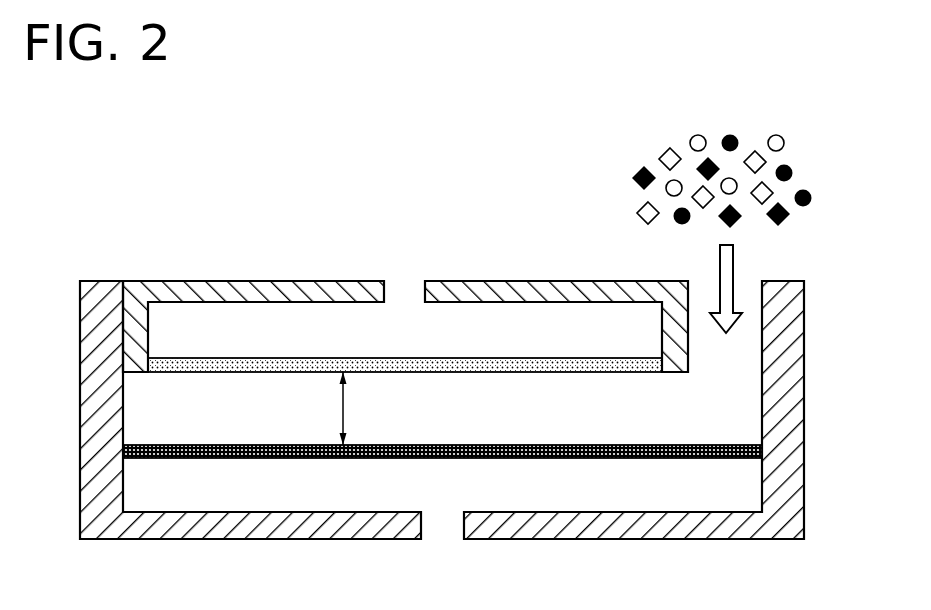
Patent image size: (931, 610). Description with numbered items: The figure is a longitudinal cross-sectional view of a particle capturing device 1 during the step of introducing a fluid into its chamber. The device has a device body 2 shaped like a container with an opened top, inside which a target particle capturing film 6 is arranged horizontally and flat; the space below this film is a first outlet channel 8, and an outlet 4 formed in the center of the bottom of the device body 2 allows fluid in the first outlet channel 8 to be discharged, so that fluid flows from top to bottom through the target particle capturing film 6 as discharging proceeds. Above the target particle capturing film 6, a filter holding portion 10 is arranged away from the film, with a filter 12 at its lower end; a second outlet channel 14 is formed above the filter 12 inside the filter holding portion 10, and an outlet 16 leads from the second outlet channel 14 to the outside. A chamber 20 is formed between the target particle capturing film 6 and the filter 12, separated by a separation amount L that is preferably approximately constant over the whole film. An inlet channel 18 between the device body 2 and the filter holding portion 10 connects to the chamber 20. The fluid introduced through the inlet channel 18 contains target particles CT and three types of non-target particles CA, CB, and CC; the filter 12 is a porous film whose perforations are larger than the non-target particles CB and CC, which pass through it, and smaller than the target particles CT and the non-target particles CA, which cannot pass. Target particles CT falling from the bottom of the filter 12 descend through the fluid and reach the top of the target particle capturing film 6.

The particle capturing device 1 is at (828, 268).
The device body 2 is at (804, 384).
The outlet 4 is at (465, 538).
The target particle capturing film 6 is at (716, 445).
The first outlet channel 8 is at (612, 490).
The filter holding portion 10 is at (237, 281).
The filter 12 is at (547, 358).
The second outlet channel 14 is at (342, 320).
The outlet 16 is at (422, 292).
The inlet channel 18 is at (689, 292).
The chamber 20 is at (462, 425).
The separation amount L is at (353, 408).
The non-target particles CA is at (784, 140).
The non-target particles CB is at (755, 151).
The target particles CT is at (791, 169).
The non-target particles CC is at (780, 226).